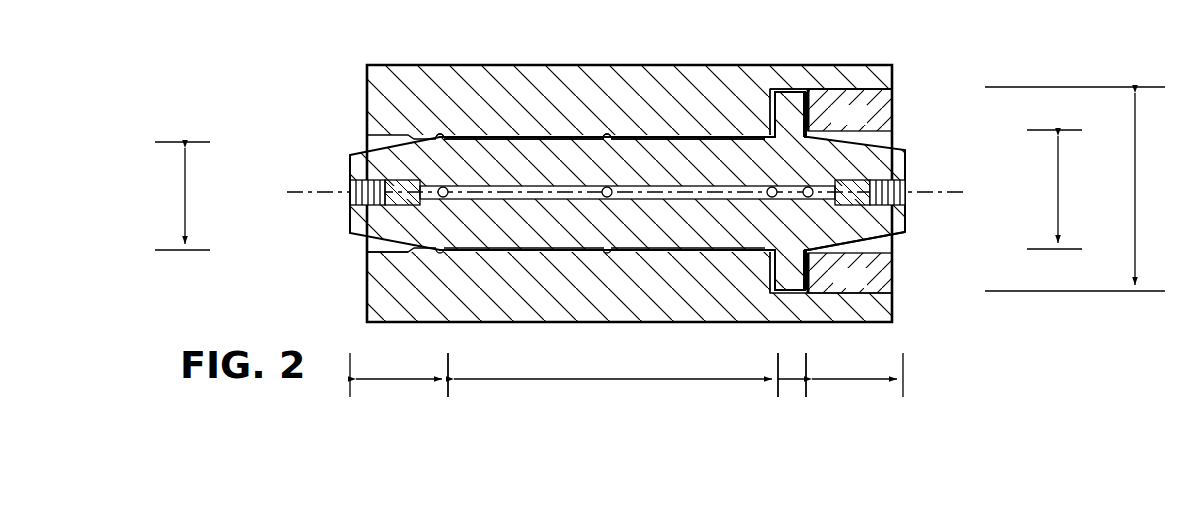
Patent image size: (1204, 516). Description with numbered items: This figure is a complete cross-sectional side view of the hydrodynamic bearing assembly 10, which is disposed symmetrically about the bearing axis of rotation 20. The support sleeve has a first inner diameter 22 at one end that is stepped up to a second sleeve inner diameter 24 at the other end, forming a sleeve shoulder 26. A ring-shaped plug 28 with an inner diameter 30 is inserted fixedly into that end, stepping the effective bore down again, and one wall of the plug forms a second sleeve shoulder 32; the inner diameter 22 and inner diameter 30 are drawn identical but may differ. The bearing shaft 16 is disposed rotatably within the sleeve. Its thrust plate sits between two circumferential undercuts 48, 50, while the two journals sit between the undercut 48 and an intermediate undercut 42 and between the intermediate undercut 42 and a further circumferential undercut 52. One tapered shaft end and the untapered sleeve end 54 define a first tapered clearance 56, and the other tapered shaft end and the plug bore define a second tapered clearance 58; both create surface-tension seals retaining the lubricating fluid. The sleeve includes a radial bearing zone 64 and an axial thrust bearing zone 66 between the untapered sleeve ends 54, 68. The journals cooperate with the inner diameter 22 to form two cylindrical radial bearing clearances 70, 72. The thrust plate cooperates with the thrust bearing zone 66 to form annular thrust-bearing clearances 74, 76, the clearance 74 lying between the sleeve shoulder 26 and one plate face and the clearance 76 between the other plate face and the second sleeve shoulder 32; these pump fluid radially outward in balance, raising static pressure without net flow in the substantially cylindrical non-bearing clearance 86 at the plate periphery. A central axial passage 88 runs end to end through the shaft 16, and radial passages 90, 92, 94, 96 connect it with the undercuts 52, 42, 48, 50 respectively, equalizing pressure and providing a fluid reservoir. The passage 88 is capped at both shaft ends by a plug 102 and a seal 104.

The hydrodynamic bearing assembly 10 is at (262, 156).
The bearing shaft 16 is at (924, 166).
The bearing axis of rotation 20 is at (960, 197).
The first inner diameter 22 is at (181, 196).
The second sleeve inner diameter 24 is at (1077, 189).
The sleeve shoulder 26 is at (766, 126).
The ring-shaped plug 28 is at (893, 116).
The inner diameter of plug 30 is at (1059, 189).
The second sleeve shoulder 32 is at (817, 106).
The intermediate undercut 42 is at (608, 134).
The circumferential undercut 48 is at (762, 124).
The circumferential undercut 50 is at (814, 132).
The circumferential undercut 52 is at (443, 134).
The untapered sleeve end 54 is at (416, 380).
The first tapered clearance 56 is at (368, 249).
The second tapered clearance 58 is at (888, 243).
The radial bearing zone 64 is at (626, 379).
The axial thrust bearing zone 66 is at (795, 378).
The untapered sleeve end 68 is at (866, 379).
The cylindrical radial bearing clearance 70 is at (553, 134).
The cylindrical radial bearing clearance 72 is at (680, 134).
The annular thrust-bearing clearance 74 is at (773, 272).
The annular thrust-bearing clearance 76 is at (808, 281).
The non-bearing clearance 86 is at (790, 98).
The central axial passage 88 is at (558, 189).
The radial passage 90 is at (443, 186).
The radial passage 92 is at (609, 186).
The radial passage 94 is at (772, 186).
The radial passage 96 is at (809, 186).
The plug 102 is at (350, 160).
The seal 104 is at (350, 200).